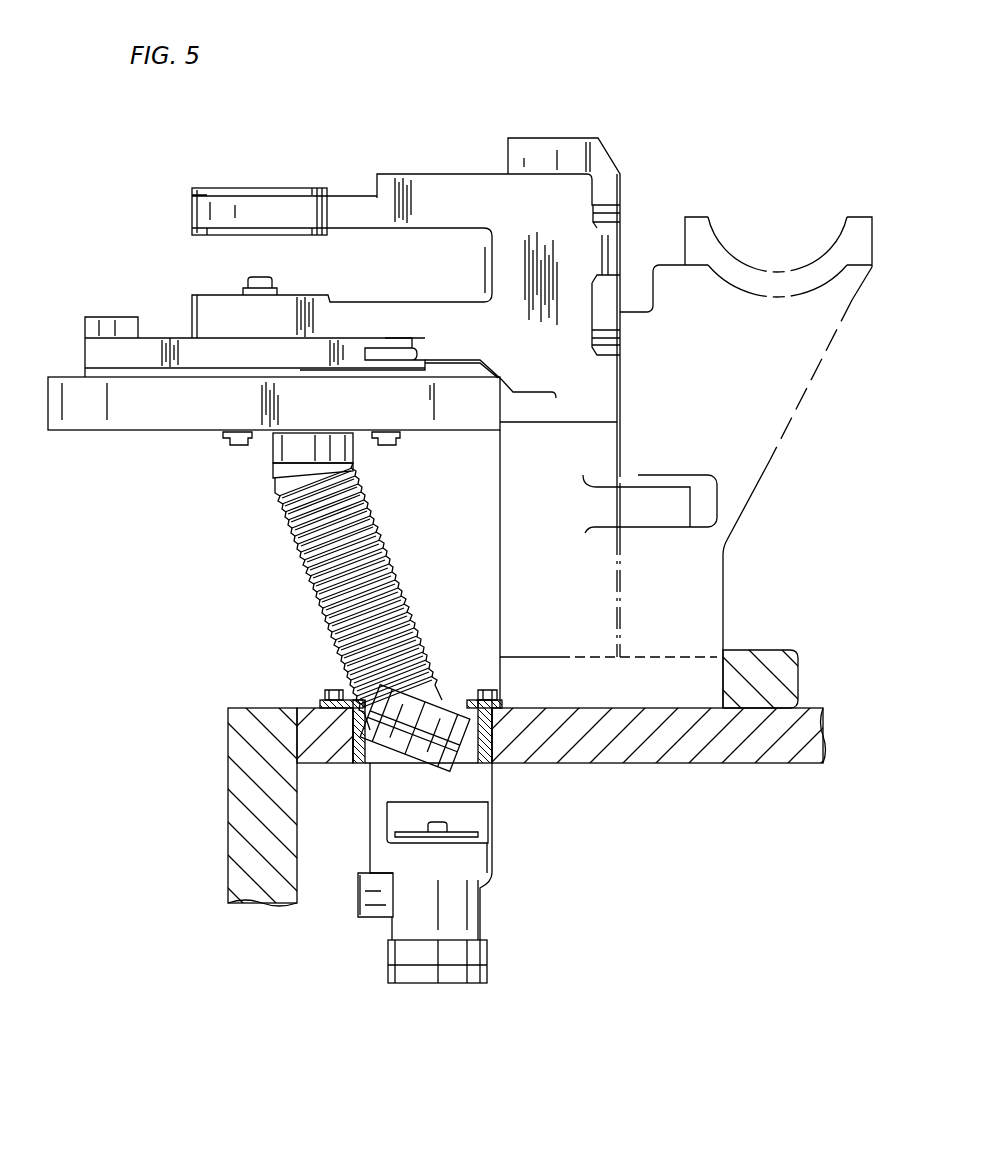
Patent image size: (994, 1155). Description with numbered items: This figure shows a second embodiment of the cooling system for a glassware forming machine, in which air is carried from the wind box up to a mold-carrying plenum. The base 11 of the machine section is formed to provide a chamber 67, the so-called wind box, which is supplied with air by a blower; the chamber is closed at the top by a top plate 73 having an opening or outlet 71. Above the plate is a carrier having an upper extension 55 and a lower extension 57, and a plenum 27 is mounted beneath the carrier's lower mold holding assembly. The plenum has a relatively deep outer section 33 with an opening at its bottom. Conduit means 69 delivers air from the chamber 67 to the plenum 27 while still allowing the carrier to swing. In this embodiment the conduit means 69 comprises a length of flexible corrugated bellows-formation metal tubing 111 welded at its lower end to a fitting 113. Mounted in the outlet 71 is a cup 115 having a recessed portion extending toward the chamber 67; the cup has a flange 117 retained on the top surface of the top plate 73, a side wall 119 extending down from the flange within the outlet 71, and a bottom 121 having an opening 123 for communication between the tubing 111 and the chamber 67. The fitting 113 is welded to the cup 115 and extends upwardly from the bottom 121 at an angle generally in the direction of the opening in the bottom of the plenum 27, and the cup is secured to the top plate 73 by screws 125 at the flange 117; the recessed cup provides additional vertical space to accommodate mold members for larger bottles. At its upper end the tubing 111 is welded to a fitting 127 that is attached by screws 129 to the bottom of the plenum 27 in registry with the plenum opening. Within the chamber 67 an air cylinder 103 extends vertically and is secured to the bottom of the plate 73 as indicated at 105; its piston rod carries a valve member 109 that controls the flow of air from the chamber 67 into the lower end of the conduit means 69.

The upper extension 55 is at (192, 210).
The lower extension 57 is at (192, 300).
The outer section 33 is at (48, 400).
The plenum 27 is at (432, 440).
The screws 129 is at (248, 447).
The fitting 127 is at (355, 463).
The flexible corrugated bellows-formation metal tubing 111 is at (283, 523).
The conduit means 69 is at (285, 586).
The fitting 113 is at (465, 697).
The cup 115 is at (475, 690).
The screws 125 is at (333, 690).
The side wall 119 is at (560, 694).
The flange 117 is at (320, 700).
The top plate 73 is at (305, 710).
The base 11 is at (228, 775).
The outlet 71 is at (377, 763).
The bottom 121 is at (385, 770).
The opening 123 is at (467, 773).
The securement of air cylinder 105 is at (493, 787).
The valve member 109 is at (483, 837).
The air cylinder 103 is at (485, 928).
The chamber 67 is at (714, 843).